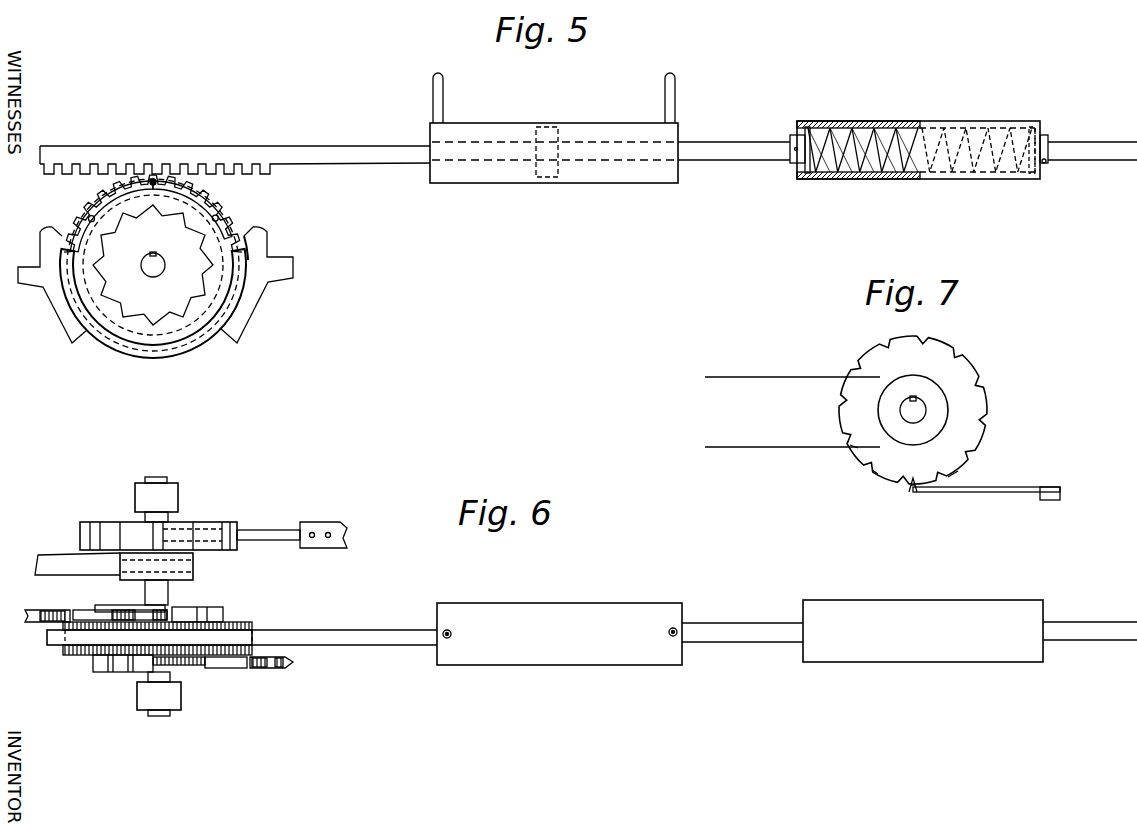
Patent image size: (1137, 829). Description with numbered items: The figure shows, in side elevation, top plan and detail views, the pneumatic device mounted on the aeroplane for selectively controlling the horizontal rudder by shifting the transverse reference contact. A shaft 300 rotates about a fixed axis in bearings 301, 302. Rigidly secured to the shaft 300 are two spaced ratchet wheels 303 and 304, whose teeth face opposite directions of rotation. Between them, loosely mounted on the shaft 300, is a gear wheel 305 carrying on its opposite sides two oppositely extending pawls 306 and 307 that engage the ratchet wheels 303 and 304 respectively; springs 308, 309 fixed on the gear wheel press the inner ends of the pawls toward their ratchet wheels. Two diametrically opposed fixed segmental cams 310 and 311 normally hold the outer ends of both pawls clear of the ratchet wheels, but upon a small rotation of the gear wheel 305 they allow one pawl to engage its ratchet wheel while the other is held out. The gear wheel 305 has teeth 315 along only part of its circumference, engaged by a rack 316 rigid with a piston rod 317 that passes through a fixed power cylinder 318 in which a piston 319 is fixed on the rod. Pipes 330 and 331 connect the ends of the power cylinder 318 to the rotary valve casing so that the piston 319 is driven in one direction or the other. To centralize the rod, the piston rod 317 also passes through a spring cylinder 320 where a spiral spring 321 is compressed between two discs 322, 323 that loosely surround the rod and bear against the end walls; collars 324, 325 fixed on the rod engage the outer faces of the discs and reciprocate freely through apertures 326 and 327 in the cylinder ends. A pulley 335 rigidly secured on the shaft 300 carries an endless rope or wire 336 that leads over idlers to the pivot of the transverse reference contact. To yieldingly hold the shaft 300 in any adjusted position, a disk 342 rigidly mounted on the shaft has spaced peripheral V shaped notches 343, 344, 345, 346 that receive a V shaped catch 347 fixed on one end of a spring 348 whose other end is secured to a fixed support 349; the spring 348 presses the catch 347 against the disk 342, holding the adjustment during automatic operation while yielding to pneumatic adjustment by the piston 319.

In FIG. 5, the shaft 300 is at (160, 268).
In FIG. 7, the shaft 300 is at (920, 417).
In FIG. 6, the shaft 300 is at (166, 518).
In FIG. 6, the bearing 301 is at (146, 697).
In FIG. 6, the bearing 302 is at (137, 497).
In FIG. 5, the ratchet wheel 303 is at (117, 295).
In FIG. 6, the ratchet wheel 303 is at (220, 666).
In FIG. 5, the ratchet wheel 304 is at (197, 307).
In FIG. 6, the ratchet wheel 304 is at (225, 612).
In FIG. 5, the gear wheel 305 is at (148, 350).
In FIG. 6, the gear wheel 305 is at (78, 650).
In FIG. 5, the pawl 306 is at (243, 233).
In FIG. 6, the pawl 306 is at (236, 662).
In FIG. 5, the pawl 307 is at (68, 228).
In FIG. 6, the pawl 307 is at (80, 612).
In FIG. 5, the spring 308 is at (187, 187).
In FIG. 6, the spring 308 is at (196, 668).
In FIG. 5, the spring 309 is at (138, 172).
In FIG. 6, the spring 309 is at (130, 613).
In FIG. 5, the segmental cam 310 is at (262, 253).
In FIG. 6, the segmental cam 310 is at (297, 657).
In FIG. 5, the segmental cam 311 is at (50, 244).
In FIG. 6, the segmental cam 311 is at (45, 618).
In FIG. 5, the teeth 315 is at (218, 191).
In FIG. 6, the teeth 315 is at (92, 664).
In FIG. 5, the rack 316 is at (78, 170).
In FIG. 6, the rack 316 is at (56, 640).
In FIG. 5, the piston rod 317 is at (396, 152).
In FIG. 6, the piston rod 317 is at (395, 633).
In FIG. 5, the power cylinder 318 is at (503, 130).
In FIG. 6, the power cylinder 318 is at (543, 613).
In FIG. 5, the piston 319 is at (556, 130).
In FIG. 5, the spring cylinder 320 is at (887, 122).
In FIG. 6, the spring cylinder 320 is at (935, 608).
In FIG. 5, the spiral spring 321 is at (953, 133).
In FIG. 5, the disc 322 is at (810, 180).
In FIG. 5, the disc 323 is at (1033, 174).
In FIG. 5, the collar 324 is at (797, 158).
In FIG. 5, the collar 325 is at (1050, 160).
In FIG. 5, the aperture 326 is at (800, 168).
In FIG. 5, the aperture 327 is at (1046, 163).
In FIG. 5, the pipe 330 is at (668, 96).
In FIG. 6, the pipe 330 is at (673, 628).
In FIG. 5, the pipe 331 is at (440, 100).
In FIG. 6, the pipe 331 is at (448, 630).
In FIG. 7, the pulley 335 is at (938, 403).
In FIG. 6, the pulley 335 is at (194, 564).
In FIG. 6, the endless rope or wire 336 is at (66, 564).
In FIG. 7, the disk 342 is at (947, 370).
In FIG. 7, the V shaped notch 343 is at (957, 475).
In FIG. 7, the V shaped notch 344 is at (914, 484).
In FIG. 7, the V shaped notch 345 is at (878, 474).
In FIG. 7, the V shaped notch 346 is at (853, 450).
In FIG. 7, the V shaped catch 347 is at (912, 494).
In FIG. 7, the spring 348 is at (975, 493).
In FIG. 6, the spring 348 is at (278, 532).
In FIG. 7, the fixed support 349 is at (1050, 492).
In FIG. 6, the fixed support 349 is at (338, 525).